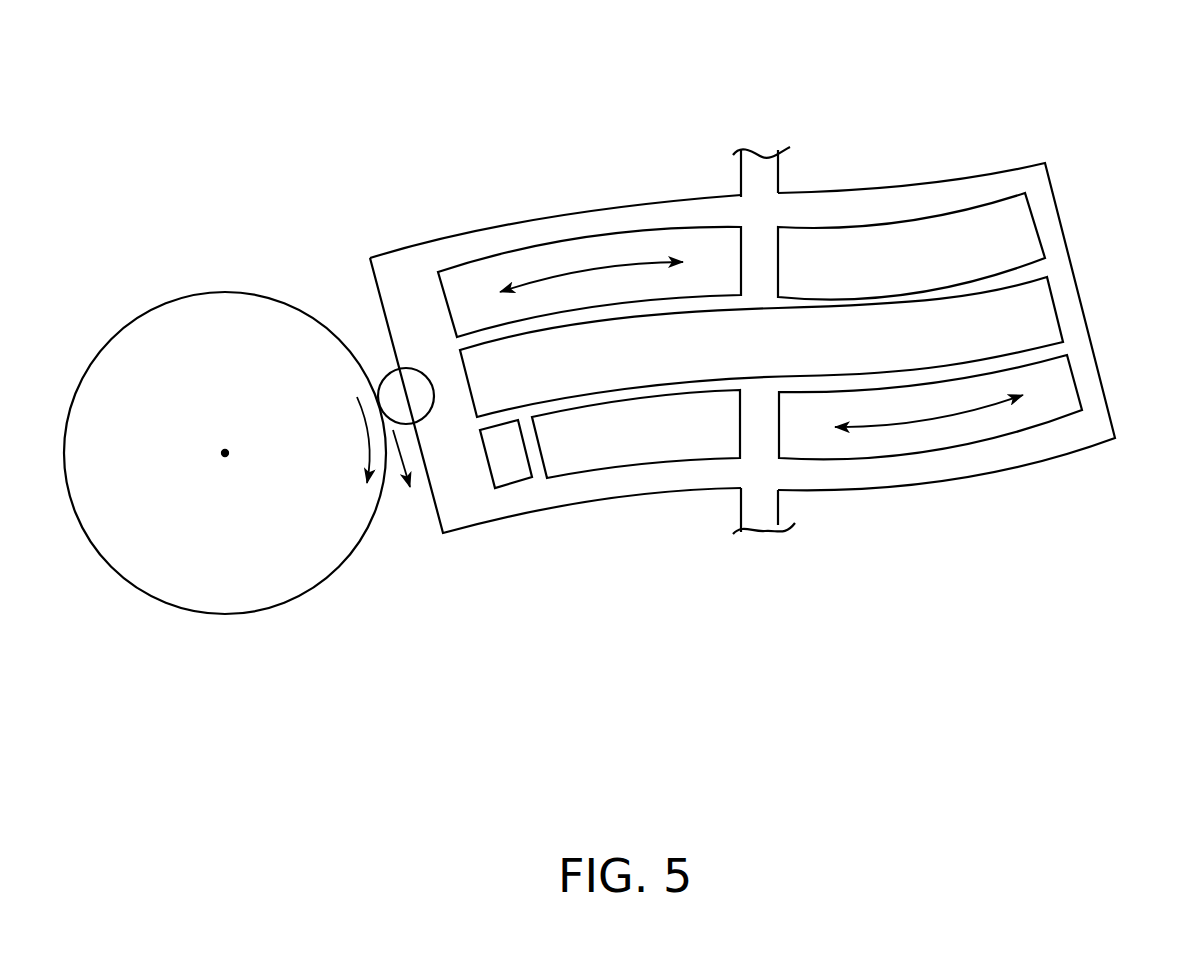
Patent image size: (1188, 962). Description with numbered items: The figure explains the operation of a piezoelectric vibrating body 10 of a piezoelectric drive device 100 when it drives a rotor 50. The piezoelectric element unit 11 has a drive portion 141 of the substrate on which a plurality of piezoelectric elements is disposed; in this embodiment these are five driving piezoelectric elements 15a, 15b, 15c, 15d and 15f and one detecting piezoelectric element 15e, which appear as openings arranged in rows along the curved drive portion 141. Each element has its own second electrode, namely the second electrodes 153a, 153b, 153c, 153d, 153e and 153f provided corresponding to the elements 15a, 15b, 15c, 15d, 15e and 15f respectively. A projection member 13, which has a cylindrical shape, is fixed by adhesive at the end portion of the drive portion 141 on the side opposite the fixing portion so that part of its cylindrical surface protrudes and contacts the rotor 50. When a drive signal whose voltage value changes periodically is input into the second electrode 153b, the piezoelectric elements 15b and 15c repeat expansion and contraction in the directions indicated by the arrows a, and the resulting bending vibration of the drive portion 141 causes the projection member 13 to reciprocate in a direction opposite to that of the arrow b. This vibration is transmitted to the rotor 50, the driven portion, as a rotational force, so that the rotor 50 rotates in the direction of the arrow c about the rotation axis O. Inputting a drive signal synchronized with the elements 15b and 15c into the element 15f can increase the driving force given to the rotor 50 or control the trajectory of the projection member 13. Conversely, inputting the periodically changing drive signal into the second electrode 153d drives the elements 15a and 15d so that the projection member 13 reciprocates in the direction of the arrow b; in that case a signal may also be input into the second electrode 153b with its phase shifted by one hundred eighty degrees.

The device 100 is at (621, 382).
The piezoelectric vibrating body 10 is at (922, 88).
The piezoelectric element unit 11 is at (1022, 165).
The projection member 13 is at (383, 370).
The driving piezoelectric element 15a is at (605, 470).
The driving piezoelectric element 15b is at (903, 453).
The driving piezoelectric element 15c is at (580, 235).
The driving piezoelectric element 15d is at (902, 217).
The detecting piezoelectric element 15e is at (512, 487).
The driving piezoelectric element 15f is at (1055, 297).
The rotor 50 is at (225, 506).
The drive portion 141 is at (482, 522).
The second electrode 153a is at (675, 438).
The second electrode 153b is at (825, 443).
The second electrode 153c is at (468, 290).
The second electrode 153d is at (825, 250).
The second electrode 153e is at (500, 457).
The second electrode 153f is at (1038, 325).
The arrow a is at (555, 273).
The arrow b is at (398, 500).
The arrow c is at (362, 425).
The rotation axis O is at (225, 458).